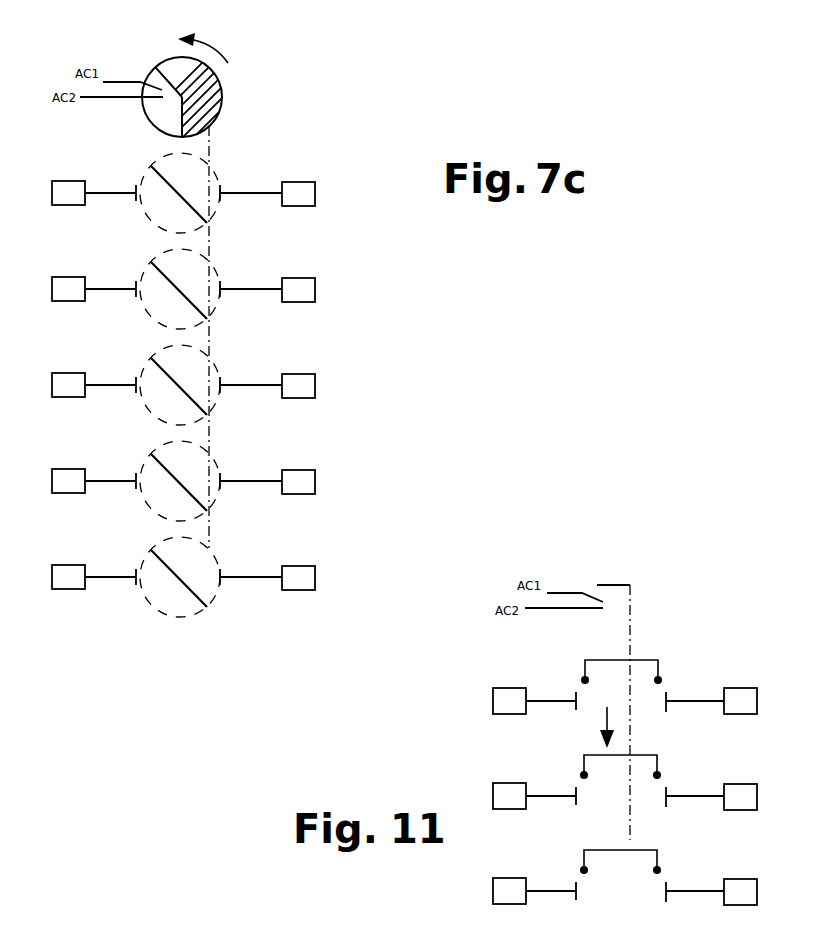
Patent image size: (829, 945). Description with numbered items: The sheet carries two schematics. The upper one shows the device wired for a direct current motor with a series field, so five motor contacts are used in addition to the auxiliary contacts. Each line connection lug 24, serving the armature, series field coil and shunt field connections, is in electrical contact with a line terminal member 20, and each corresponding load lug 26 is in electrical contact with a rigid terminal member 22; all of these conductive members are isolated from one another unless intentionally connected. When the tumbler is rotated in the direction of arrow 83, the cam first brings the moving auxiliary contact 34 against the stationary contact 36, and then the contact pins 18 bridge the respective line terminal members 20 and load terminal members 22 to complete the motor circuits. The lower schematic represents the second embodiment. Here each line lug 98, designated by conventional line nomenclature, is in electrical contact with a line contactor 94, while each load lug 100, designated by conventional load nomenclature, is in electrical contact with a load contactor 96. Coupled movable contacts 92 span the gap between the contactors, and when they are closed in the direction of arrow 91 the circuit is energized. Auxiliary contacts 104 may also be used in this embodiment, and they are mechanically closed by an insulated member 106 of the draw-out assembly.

In FIG. 7C, the arrow 83 is at (209, 46).
In FIG. 7C, the moving auxiliary contact 34 is at (123, 82).
In FIG. 7C, the stationary contact 36 is at (128, 98).
In FIG. 7C, the line connection lug 24 is at (80, 180).
In FIG. 7C, the load lug 26 is at (277, 181).
In FIG. 7C, the contact pin 18 is at (180, 193).
In FIG. 7C, the line terminal member 20 is at (120, 207).
In FIG. 7C, the rigid terminal member 22 is at (237, 207).
In FIG. 11, the auxiliary contacts 104 is at (560, 593).
In FIG. 11, the insulated member 106 is at (610, 585).
In FIG. 11, the coupled movable contacts 92 is at (619, 658).
In FIG. 11, the line lug 98 is at (525, 688).
In FIG. 11, the line contactor 94 is at (556, 691).
In FIG. 11, the load contactor 96 is at (682, 692).
In FIG. 11, the load lug 100 is at (728, 691).
In FIG. 11, the arrow 91 is at (602, 718).